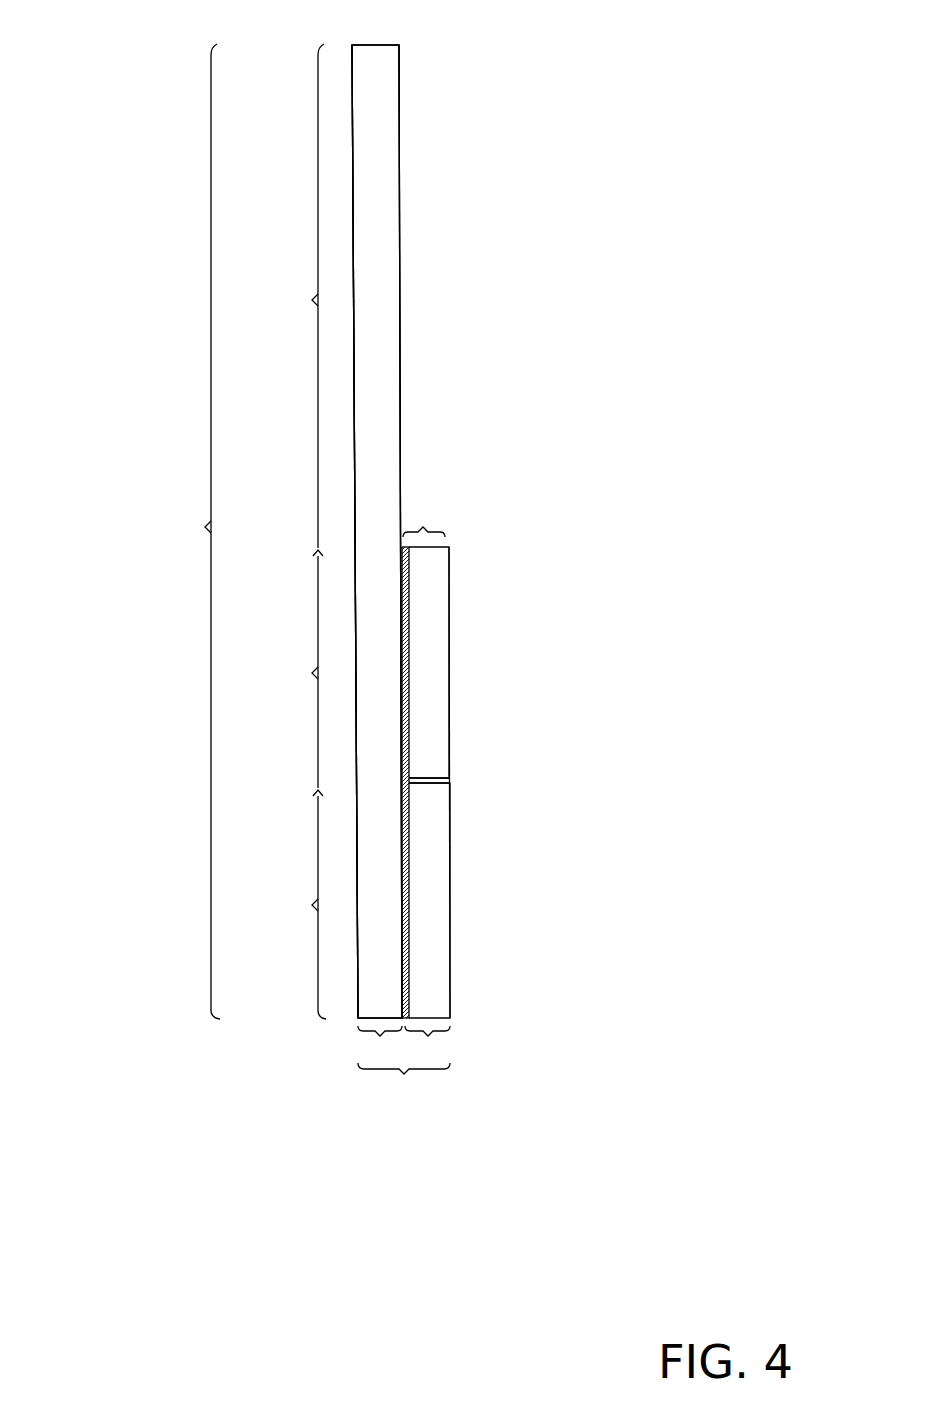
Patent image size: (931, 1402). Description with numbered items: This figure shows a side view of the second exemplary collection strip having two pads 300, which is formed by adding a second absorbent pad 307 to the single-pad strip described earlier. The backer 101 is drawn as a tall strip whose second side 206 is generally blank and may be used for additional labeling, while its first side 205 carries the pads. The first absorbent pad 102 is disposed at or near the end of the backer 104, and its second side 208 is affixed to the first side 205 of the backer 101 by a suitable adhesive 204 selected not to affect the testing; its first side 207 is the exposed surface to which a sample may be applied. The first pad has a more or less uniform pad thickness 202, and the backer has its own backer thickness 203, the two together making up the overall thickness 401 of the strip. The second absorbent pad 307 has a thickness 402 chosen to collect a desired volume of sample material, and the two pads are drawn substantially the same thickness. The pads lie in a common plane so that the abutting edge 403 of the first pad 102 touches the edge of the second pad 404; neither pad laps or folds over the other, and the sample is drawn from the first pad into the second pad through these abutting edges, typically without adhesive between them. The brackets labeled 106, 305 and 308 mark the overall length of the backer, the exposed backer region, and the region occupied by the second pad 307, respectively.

The backer 101 is at (380, 444).
The absorbent pad 102 is at (432, 947).
The end of the backer 104 is at (295, 907).
The backer length 106 is at (179, 531).
The pad thickness 202 is at (428, 1038).
The backer thickness 203 is at (380, 1037).
The adhesive 204 is at (405, 715).
The first side of the backer 205 is at (400, 162).
The second side of the backer 206 is at (352, 163).
The first side of the absorbent pad 207 is at (450, 988).
The second side of the absorbent pad 208 is at (400, 990).
The second exemplary collection strip having two pads 300 is at (371, 704).
The exposed backer region 305 is at (291, 300).
The second absorbent pad 307 is at (435, 650).
The second pad region 308 is at (293, 676).
The overall thickness 401 is at (402, 1112).
The thickness of the second absorbent pad 402 is at (423, 527).
The abutting edge of the first pad 403 is at (426, 788).
The edge of the second pad 404 is at (426, 774).